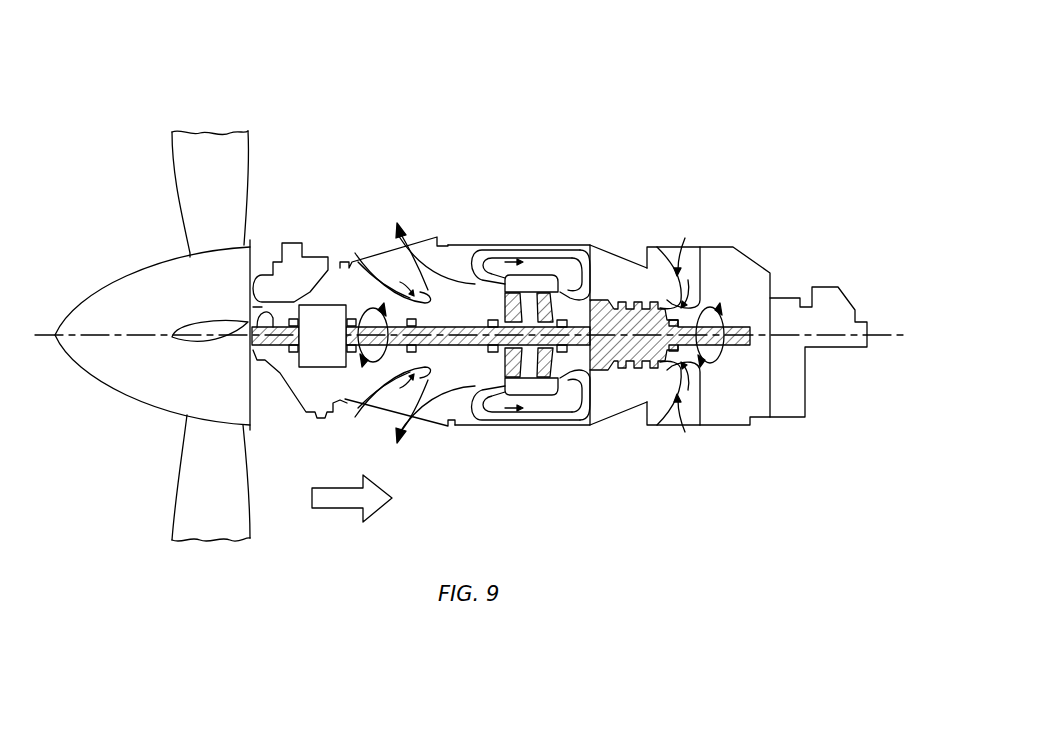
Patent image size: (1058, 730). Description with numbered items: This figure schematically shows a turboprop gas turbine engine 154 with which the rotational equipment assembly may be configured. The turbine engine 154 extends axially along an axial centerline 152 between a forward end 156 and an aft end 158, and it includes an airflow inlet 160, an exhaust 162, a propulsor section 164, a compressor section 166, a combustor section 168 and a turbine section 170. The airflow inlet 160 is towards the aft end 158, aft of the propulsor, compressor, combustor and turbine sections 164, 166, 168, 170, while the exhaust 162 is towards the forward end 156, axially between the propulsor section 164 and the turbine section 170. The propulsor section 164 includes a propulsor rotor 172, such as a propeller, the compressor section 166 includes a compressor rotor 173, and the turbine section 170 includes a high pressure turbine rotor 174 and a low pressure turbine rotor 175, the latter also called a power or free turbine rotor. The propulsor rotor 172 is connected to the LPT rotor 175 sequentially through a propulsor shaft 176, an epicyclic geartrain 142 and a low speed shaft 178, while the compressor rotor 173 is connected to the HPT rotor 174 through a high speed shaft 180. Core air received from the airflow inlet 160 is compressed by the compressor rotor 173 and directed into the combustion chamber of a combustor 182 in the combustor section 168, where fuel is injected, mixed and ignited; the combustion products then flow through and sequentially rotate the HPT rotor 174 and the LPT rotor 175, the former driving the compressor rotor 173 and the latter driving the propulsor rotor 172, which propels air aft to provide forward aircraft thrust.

The epicyclic geartrain 142 is at (328, 292).
The axial centerline 152 is at (898, 337).
The turboprop gas turbine engine 154 is at (533, 134).
The forward end 156 is at (57, 335).
The aft end 158 is at (868, 327).
The airflow inlet 160 is at (697, 240).
The exhaust 162 is at (425, 237).
The propulsor section 164 is at (212, 100).
The compressor section 166 is at (635, 394).
The combustor section 168 is at (496, 245).
The turbine section 170 is at (531, 262).
The propulsor rotor 172 is at (187, 417).
The compressor rotor 173 is at (628, 316).
The high pressure turbine rotor 174 is at (546, 396).
The low pressure turbine rotor 175 is at (490, 398).
The propulsor shaft 176 is at (262, 322).
The low speed shaft 178 is at (377, 280).
The high speed shaft 180 is at (594, 400).
The combustor 182 is at (565, 258).